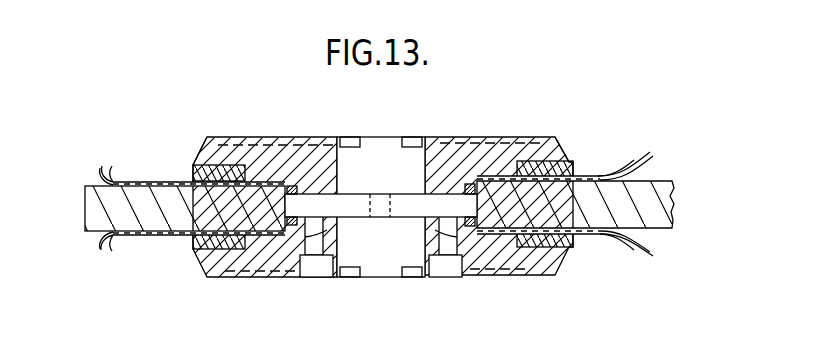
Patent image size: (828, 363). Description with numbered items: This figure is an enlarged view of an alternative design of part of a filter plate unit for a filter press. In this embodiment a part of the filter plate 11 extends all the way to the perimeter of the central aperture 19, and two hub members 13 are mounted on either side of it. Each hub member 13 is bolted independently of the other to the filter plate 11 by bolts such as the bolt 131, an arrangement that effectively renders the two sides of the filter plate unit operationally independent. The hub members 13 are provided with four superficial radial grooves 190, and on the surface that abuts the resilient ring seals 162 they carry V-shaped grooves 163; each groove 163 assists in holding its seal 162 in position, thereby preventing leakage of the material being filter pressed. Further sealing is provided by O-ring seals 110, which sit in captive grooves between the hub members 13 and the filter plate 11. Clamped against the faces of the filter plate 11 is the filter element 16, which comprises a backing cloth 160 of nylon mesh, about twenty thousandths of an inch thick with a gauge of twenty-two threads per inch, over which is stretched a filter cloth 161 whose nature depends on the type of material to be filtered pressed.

The filter plate 11 is at (150, 221).
The hub members 13 is at (521, 137).
The bolt 131 is at (314, 248).
The filter element 16 is at (153, 175).
The backing cloth 160 is at (108, 176).
The filter cloth 161 is at (114, 177).
The resilient ring seals 162 is at (193, 170).
The V-shaped grooves 163 is at (208, 156).
The central aperture 19 is at (389, 148).
The superficial radial grooves 190 is at (252, 137).
The O-ring seals 110 is at (286, 186).